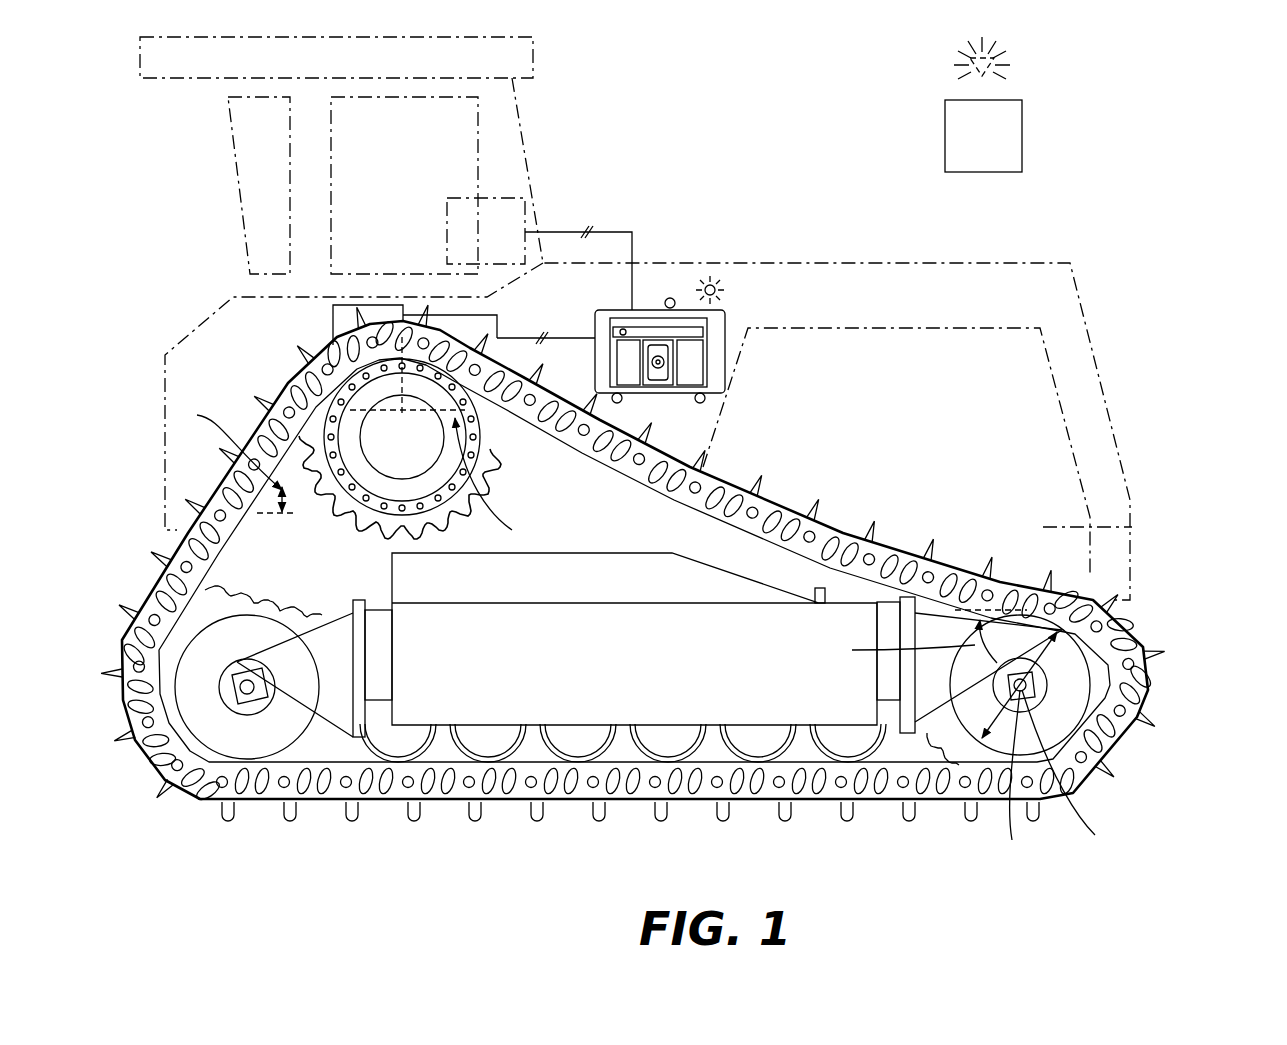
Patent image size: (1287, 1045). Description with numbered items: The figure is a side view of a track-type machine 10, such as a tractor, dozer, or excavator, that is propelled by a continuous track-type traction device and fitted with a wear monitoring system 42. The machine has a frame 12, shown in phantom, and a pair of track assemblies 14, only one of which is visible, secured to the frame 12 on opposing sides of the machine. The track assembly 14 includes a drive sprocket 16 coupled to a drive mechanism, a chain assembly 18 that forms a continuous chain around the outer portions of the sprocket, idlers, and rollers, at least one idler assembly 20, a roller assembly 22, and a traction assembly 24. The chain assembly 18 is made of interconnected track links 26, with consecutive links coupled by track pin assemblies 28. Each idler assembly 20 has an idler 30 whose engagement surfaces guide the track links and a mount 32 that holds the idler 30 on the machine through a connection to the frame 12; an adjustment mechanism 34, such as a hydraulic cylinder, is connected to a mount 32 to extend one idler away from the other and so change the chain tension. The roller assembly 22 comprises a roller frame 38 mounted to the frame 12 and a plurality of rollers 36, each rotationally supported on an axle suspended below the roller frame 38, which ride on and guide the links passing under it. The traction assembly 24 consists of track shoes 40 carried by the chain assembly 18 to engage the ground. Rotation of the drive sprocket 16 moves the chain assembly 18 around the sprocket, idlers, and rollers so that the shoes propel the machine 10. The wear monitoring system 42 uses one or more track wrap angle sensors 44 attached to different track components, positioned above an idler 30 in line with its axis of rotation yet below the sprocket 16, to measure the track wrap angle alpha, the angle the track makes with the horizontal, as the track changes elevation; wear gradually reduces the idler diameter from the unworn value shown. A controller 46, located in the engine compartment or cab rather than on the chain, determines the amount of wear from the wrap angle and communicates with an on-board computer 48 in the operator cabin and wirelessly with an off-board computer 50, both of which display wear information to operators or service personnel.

The track-type machine 10 is at (735, 195).
The frame 12 is at (222, 358).
The track assembly 14 is at (1200, 638).
The drive sprocket 16 is at (498, 476).
The chain assembly 18 is at (634, 582).
The idler assembly 20 is at (255, 582).
The roller assembly 22 is at (370, 578).
The traction assembly 24 is at (1075, 793).
The track link 26 is at (783, 793).
The track pin assembly 28 is at (655, 788).
The idler 30 is at (205, 713).
The mount 32 is at (305, 676).
The adjustment mechanism 34 is at (820, 588).
The roller 36 is at (547, 740).
The roller frame 38 is at (699, 676).
The track shoe 40 is at (438, 803).
The wear monitoring system 42 is at (625, 145).
The track wrap angle sensor 44 is at (492, 380).
The controller 46 is at (723, 323).
The on-board computer 48 is at (503, 197).
The off-board computer 50 is at (1022, 128).